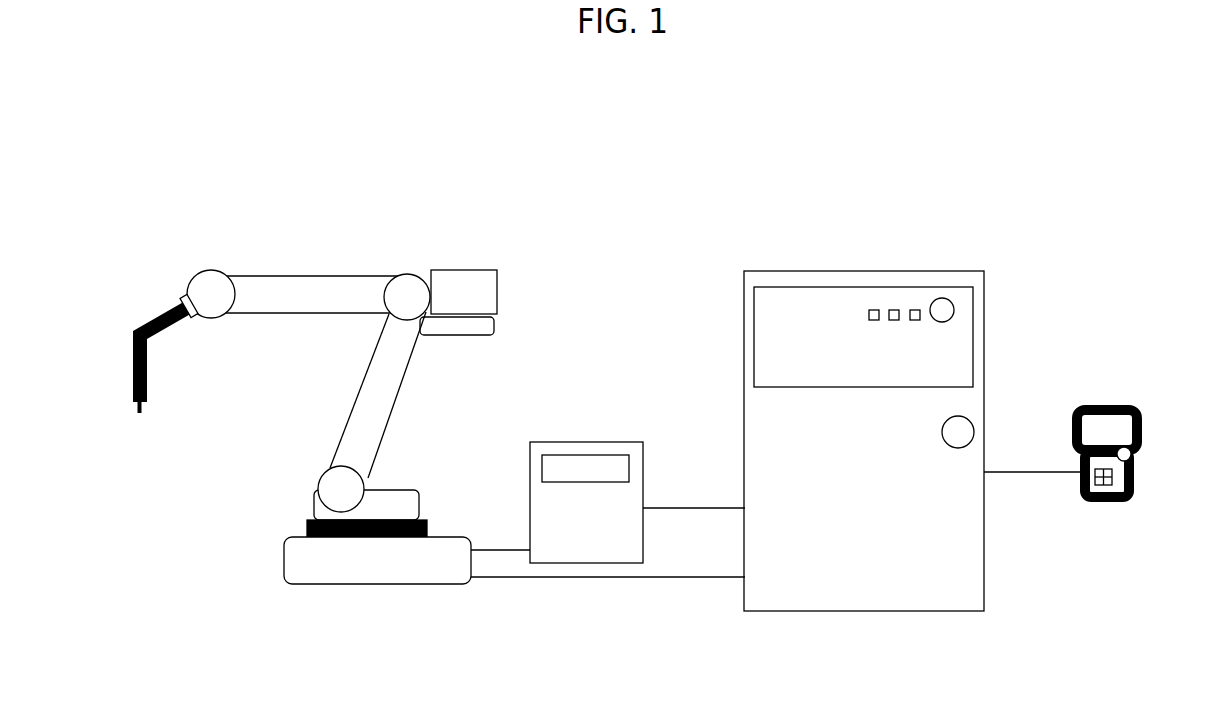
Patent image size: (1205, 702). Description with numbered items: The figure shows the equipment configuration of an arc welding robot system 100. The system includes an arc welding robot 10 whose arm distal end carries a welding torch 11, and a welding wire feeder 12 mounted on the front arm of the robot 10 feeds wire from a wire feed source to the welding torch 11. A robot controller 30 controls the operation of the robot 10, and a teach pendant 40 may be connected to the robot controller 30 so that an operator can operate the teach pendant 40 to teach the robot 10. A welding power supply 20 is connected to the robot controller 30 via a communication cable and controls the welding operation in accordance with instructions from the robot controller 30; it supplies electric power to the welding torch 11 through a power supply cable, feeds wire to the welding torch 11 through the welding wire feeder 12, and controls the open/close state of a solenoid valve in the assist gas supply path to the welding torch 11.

The arc welding robot system 100 is at (641, 186).
The arc welding robot 10 is at (318, 272).
The welding torch 11 is at (137, 330).
The welding wire feeder 12 is at (478, 270).
The welding power supply 20 is at (598, 440).
The robot controller 30 is at (935, 270).
The teach pendant 40 is at (1118, 403).